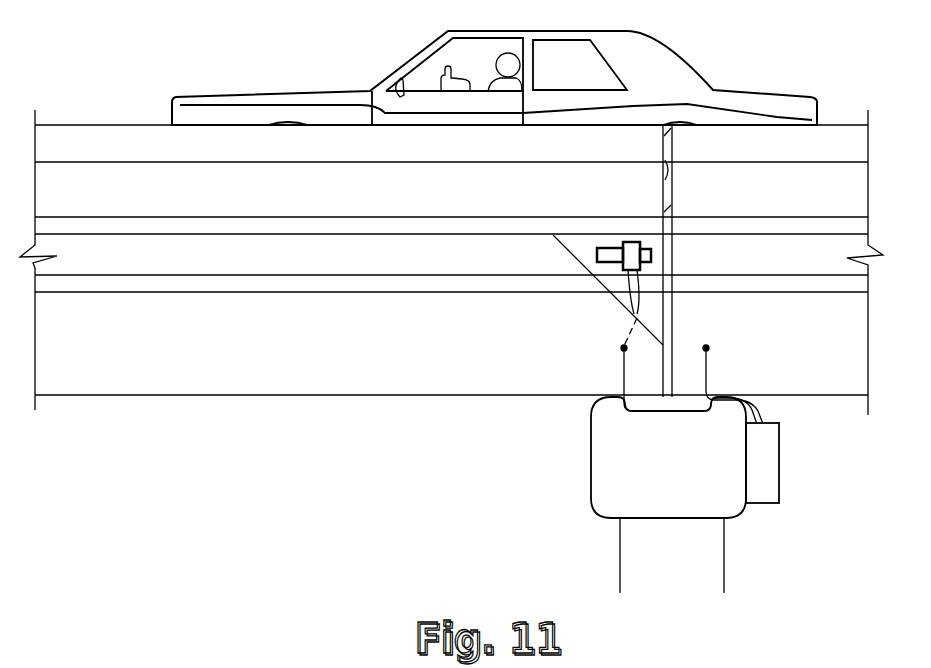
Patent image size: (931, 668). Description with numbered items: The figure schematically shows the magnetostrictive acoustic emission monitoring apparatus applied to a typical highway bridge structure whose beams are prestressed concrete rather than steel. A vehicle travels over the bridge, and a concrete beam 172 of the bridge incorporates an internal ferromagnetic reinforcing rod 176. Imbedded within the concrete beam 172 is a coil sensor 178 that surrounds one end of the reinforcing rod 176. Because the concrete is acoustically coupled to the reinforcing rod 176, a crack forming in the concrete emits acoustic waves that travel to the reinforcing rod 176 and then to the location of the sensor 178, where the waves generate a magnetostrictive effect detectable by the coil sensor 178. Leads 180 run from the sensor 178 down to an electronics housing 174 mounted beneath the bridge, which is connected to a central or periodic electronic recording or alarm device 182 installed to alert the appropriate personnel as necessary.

The concrete beam 172 is at (363, 205).
The control unit housing 174 is at (685, 476).
The reinforcing rod 176 is at (605, 247).
The coil sensor 178 is at (633, 240).
The wires 180 is at (623, 376).
The electronic recording or alarm device 182 is at (780, 443).